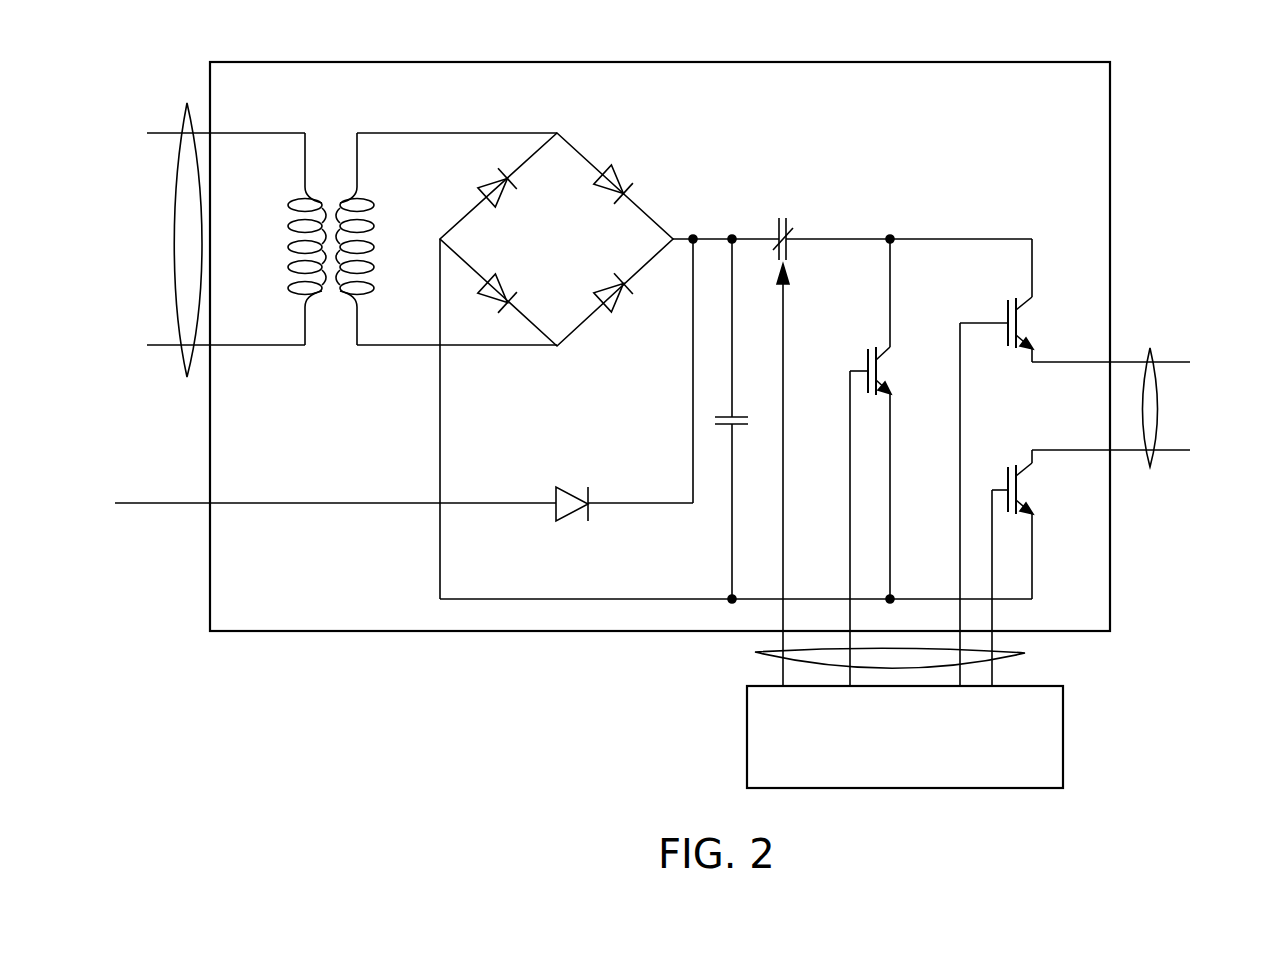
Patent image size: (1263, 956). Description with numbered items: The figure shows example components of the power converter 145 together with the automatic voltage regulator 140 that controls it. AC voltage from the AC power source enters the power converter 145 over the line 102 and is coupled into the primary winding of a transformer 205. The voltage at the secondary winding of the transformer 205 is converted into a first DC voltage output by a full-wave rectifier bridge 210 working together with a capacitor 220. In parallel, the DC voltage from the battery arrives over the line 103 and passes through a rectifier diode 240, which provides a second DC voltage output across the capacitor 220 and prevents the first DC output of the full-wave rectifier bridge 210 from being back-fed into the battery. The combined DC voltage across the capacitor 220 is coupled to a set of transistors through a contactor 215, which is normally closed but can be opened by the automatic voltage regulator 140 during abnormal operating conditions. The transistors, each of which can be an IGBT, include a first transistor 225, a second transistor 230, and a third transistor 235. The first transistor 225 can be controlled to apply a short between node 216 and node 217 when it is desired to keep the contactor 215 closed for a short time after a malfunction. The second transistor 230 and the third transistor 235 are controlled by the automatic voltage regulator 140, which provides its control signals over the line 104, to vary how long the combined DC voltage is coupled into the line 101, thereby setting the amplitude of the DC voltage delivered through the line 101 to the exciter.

The line 101 is at (1151, 462).
The line 102 is at (188, 378).
The line 103 is at (183, 502).
The line 104 is at (755, 652).
The automatic voltage regulator 140 is at (1054, 711).
The power converter 145 is at (1095, 93).
The transformer 205 is at (402, 216).
The full-wave rectifier bridge 210 is at (666, 145).
The contactor 215 is at (778, 234).
The node 216 is at (890, 233).
The node 217 is at (890, 603).
The capacitor 220 is at (735, 416).
The first transistor 225 is at (866, 366).
The second transistor 230 is at (1006, 310).
The third transistor 235 is at (1006, 478).
The rectifier diode 240 is at (604, 476).